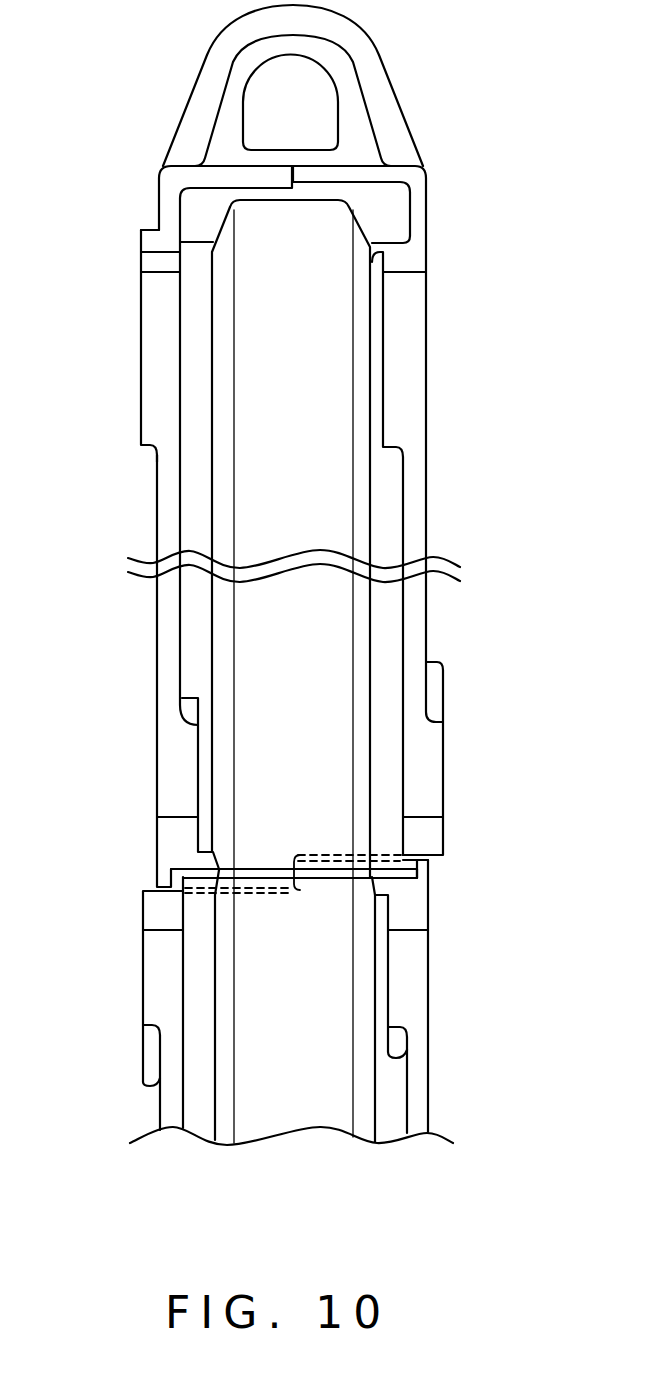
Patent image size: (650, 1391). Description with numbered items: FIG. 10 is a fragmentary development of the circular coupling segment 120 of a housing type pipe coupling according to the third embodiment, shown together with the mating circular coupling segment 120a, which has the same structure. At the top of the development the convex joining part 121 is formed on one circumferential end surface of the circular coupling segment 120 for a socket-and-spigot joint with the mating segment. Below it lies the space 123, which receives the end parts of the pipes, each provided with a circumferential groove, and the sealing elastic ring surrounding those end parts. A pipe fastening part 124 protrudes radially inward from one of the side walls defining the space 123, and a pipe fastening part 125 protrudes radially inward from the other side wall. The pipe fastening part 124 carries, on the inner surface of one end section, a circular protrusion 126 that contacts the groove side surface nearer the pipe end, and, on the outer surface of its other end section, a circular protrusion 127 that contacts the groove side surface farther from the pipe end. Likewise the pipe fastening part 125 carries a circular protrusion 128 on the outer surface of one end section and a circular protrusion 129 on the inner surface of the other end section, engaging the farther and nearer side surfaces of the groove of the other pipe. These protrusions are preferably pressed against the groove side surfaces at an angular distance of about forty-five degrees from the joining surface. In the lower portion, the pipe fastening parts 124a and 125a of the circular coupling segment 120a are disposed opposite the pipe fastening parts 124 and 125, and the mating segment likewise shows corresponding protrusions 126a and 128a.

The circular coupling segment 120 is at (400, 100).
The convex joining part 121 is at (198, 177).
The space 123 is at (267, 253).
The circular protrusion 128 is at (157, 345).
The circular protrusion 126 is at (383, 342).
The pipe fastening part 125 is at (165, 510).
The pipe fastening part 124 is at (417, 502).
The circular protrusion 129 is at (198, 767).
The circular protrusion 127 is at (430, 772).
The lower left outer wall 128a is at (157, 965).
The lower right inner member 126a is at (388, 975).
The pipe fastening part 125a is at (175, 1110).
The pipe fastening part 124a is at (418, 1108).
The circular coupling segment 120a is at (287, 1080).